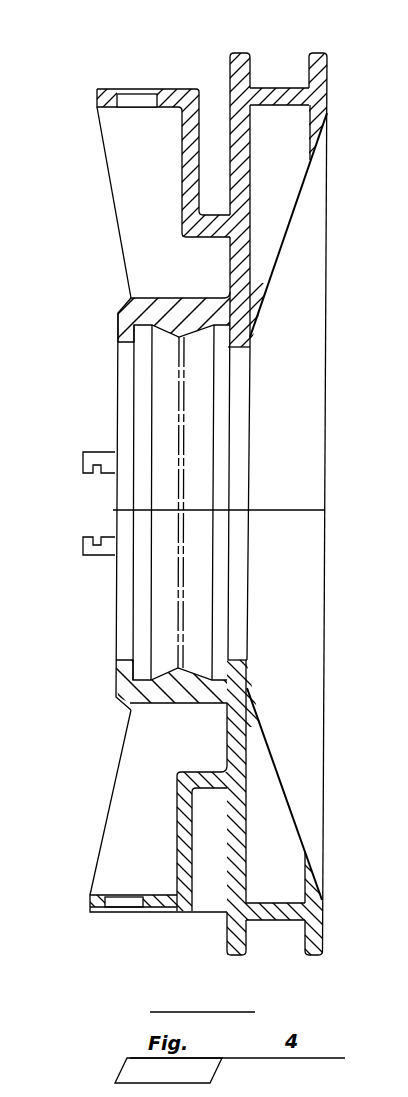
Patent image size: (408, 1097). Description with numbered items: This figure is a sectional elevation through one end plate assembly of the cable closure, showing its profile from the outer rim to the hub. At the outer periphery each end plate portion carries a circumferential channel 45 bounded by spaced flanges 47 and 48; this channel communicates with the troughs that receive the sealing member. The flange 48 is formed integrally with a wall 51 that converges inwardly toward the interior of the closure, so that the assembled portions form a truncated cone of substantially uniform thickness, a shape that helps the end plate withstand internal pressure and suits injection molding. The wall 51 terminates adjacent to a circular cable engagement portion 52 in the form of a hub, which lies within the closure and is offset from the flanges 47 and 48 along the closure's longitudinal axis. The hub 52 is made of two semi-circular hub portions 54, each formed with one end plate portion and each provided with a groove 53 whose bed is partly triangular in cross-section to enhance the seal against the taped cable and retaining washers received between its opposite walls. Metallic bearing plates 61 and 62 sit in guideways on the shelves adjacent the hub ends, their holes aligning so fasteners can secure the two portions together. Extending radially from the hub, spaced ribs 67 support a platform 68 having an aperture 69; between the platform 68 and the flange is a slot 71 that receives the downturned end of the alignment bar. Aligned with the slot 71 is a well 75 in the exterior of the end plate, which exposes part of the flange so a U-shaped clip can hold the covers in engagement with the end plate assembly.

The circumferential channel 45 is at (280, 70).
The flange 47 is at (228, 65).
The flange 48 is at (329, 65).
The wall 51 is at (313, 247).
The cable engagement portion 52 is at (102, 343).
The groove 53 is at (142, 352).
The hub portion 54 is at (117, 312).
The bearing plate 61 is at (84, 467).
The bearing plate 62 is at (84, 547).
The rib 67 is at (123, 823).
The platform 68 is at (90, 900).
The aperture 69 is at (120, 902).
The slot 71 is at (210, 103).
The well 75 is at (270, 865).